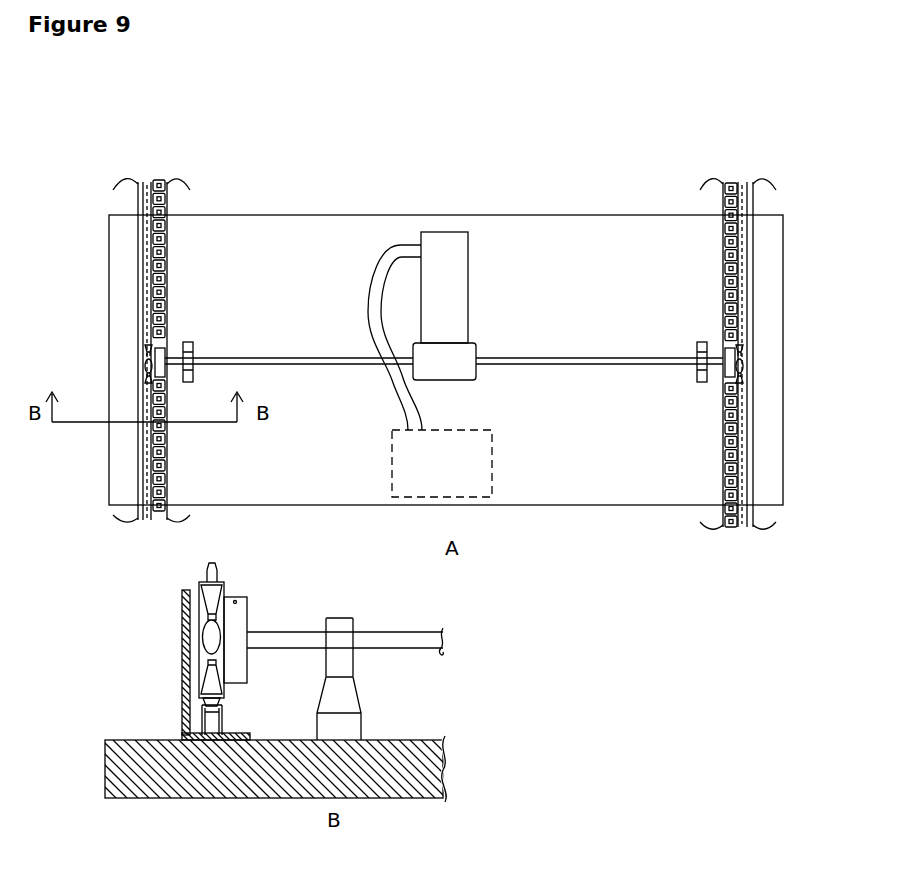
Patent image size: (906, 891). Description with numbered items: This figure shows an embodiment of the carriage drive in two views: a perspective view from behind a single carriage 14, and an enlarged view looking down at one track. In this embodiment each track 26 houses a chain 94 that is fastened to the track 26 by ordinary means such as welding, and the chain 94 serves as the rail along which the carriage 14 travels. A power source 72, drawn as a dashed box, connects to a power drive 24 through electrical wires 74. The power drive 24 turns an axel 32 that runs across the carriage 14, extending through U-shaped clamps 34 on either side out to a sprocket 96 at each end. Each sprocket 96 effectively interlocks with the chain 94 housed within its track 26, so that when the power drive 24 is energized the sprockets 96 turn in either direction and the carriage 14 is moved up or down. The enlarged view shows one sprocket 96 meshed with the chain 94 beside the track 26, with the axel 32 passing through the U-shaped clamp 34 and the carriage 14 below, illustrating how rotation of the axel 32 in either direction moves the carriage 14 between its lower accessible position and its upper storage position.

The carriage 14 is at (109, 262).
The power drive 24 is at (470, 258).
The track 26 is at (182, 604).
The axel 32 is at (584, 367).
The U-shaped clamps 34 is at (190, 342).
The power source 72 is at (490, 480).
The electrical wires 74 is at (375, 265).
The chain 94 is at (167, 259).
The sprocket 96 is at (150, 360).